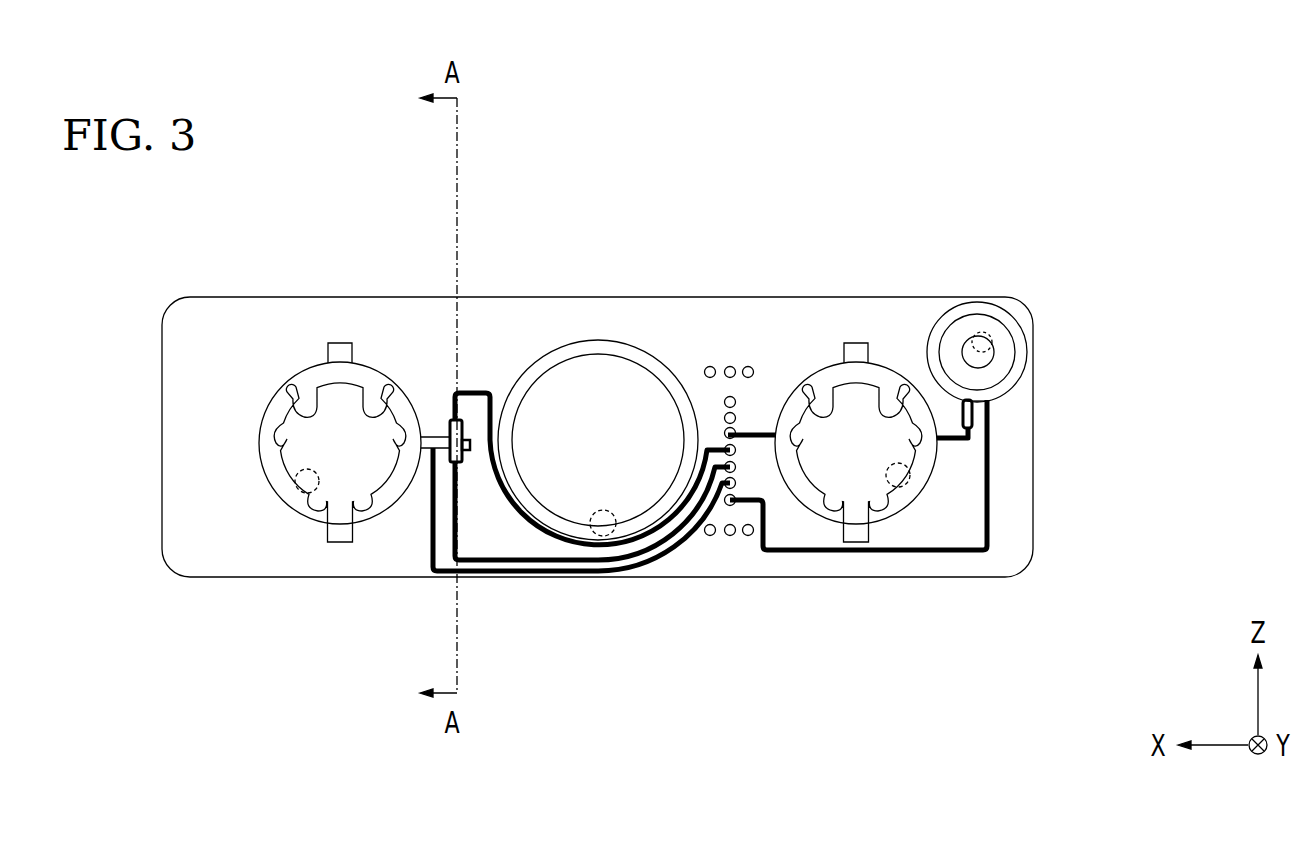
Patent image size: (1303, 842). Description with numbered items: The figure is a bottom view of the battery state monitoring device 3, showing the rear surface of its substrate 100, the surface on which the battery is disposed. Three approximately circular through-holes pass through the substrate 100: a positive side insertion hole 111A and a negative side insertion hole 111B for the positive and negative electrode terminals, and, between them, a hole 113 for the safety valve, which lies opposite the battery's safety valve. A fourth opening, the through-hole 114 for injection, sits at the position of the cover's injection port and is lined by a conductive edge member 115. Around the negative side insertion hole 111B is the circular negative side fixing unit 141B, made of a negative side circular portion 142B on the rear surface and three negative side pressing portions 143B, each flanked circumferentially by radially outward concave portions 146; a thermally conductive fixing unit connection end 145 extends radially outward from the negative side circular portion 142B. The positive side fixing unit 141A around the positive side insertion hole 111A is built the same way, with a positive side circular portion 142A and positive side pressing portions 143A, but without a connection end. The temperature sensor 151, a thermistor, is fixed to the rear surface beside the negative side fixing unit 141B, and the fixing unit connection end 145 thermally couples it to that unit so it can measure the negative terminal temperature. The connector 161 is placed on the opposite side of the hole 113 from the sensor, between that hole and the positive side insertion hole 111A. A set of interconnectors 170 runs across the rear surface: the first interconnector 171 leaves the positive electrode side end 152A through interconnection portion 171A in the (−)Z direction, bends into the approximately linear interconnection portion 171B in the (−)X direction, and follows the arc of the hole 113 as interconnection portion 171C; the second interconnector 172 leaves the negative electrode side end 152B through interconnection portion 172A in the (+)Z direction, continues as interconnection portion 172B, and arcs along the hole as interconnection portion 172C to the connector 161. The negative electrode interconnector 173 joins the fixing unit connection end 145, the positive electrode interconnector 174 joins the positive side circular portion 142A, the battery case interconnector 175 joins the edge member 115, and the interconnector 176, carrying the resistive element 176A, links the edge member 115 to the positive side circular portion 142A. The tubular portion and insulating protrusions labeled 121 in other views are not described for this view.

The battery state monitoring device 3 is at (893, 132).
The substrate 100 is at (887, 294).
The positive side insertion hole 111A is at (900, 477).
The negative side insertion hole 111B is at (300, 480).
The hole for a safety valve 113 is at (612, 537).
The through-hole for injection 114 is at (981, 345).
The edge member 115 is at (1022, 333).
The cylindrical portion 121 is at (662, 352).
The positive side fixing unit 141A is at (926, 489).
The negative side fixing unit 141B is at (243, 452).
The positive side circular portion 142A is at (898, 500).
The negative side circular portion 142B is at (265, 469).
The positive side pressing portion 143A is at (843, 392).
The negative side pressing portion 143B is at (345, 412).
The fixing unit connection end 145 is at (428, 436).
The concave portion 146 is at (290, 398).
The temperature sensor 151 is at (471, 441).
The positive electrode side end 152A is at (460, 460).
The negative electrode side end 152B is at (457, 420).
The connector 161 is at (713, 543).
The interconnector 170 is at (796, 456).
The first interconnector 171 is at (566, 581).
The interconnection portion 171A is at (462, 517).
The interconnection portion 171B is at (544, 562).
The interconnection portion 171C is at (663, 550).
The second interconnector 172 is at (502, 388).
The interconnection portion 172A is at (455, 395).
The interconnection portion 172B is at (489, 398).
The interconnection portion 172C is at (501, 490).
The negative electrode interconnector 173 is at (441, 592).
The positive electrode interconnector 174 is at (762, 431).
The battery case interconnector 175 is at (989, 422).
The interconnector 176 is at (1034, 305).
The resistive element 176A is at (973, 416).